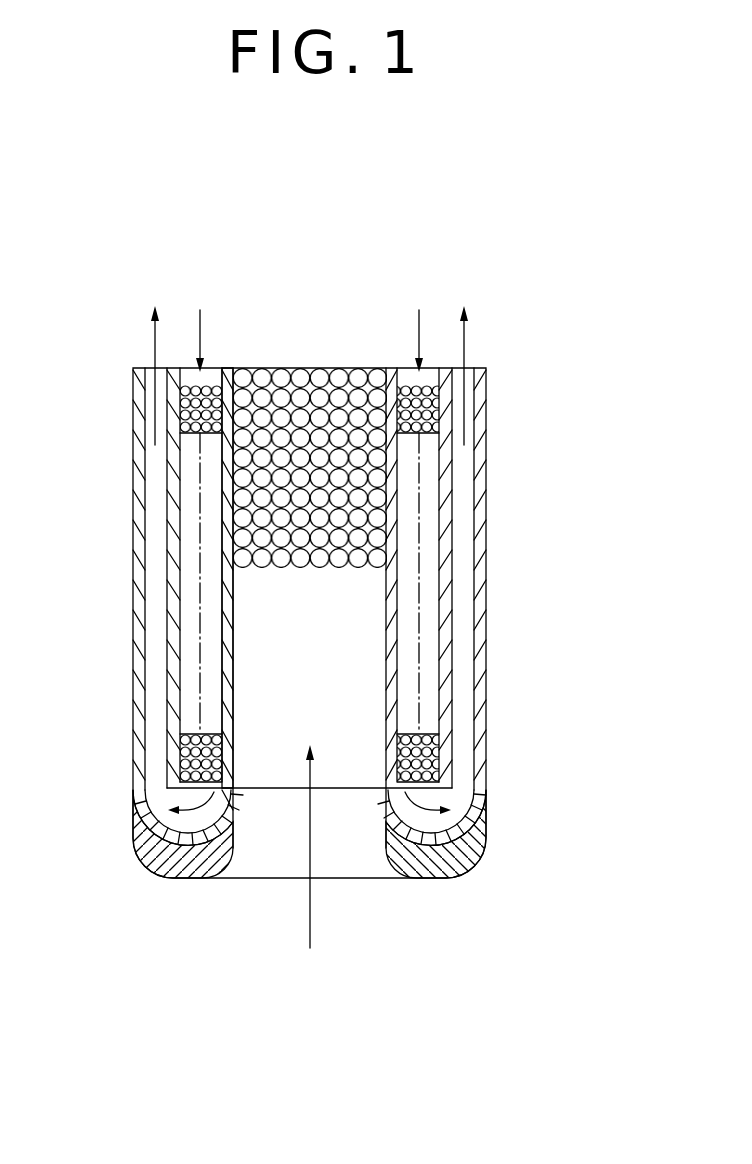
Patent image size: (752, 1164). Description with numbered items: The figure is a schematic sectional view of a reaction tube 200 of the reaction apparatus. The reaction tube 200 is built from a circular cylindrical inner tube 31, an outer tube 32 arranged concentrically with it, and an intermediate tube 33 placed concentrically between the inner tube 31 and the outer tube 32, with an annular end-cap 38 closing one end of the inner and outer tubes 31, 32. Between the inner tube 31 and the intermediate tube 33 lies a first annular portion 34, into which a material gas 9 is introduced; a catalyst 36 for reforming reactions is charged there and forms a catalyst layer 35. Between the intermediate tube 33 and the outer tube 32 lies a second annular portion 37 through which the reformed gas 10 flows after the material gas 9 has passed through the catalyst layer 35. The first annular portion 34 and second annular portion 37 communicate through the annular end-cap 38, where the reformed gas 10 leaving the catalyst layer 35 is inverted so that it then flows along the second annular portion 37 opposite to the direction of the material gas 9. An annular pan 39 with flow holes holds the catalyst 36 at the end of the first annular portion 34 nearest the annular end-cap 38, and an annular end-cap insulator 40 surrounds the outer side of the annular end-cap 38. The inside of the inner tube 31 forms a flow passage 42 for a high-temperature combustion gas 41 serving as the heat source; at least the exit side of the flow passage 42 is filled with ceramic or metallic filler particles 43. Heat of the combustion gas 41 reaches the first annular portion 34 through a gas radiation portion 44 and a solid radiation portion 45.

The material gas 9 is at (203, 342).
The reformed gas 10 is at (152, 340).
The inner tube 31 is at (400, 508).
The outer tube 32 is at (487, 553).
The intermediate tube 33 is at (450, 600).
The first annular portion 34 is at (420, 440).
The catalyst layer 35 is at (455, 417).
The catalyst 36 is at (420, 443).
The second annular portion 37 is at (460, 640).
The annular end-cap 38 is at (482, 800).
The annular pan 39 is at (456, 782).
The annular end-cap insulator 40 is at (472, 856).
The combustion gas 41 is at (310, 923).
The flow passage 42 is at (355, 710).
The filler particles 43 is at (302, 368).
The gas radiation portion 44 is at (262, 660).
The solid radiation portion 45 is at (232, 488).
The reaction tube 200 is at (500, 677).